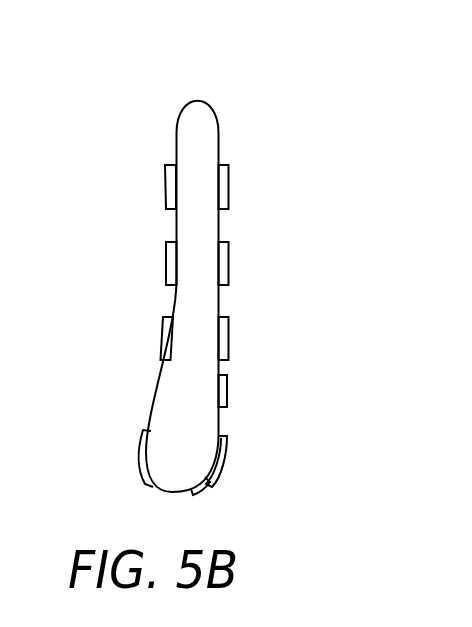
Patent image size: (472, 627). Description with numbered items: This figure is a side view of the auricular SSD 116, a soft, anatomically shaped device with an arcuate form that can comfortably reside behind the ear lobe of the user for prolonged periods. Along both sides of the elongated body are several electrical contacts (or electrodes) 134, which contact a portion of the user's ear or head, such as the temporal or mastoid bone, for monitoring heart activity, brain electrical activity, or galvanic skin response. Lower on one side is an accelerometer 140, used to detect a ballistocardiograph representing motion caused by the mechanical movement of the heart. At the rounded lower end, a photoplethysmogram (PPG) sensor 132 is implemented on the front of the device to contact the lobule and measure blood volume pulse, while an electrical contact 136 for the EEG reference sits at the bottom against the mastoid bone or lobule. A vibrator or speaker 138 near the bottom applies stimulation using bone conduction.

The auricular SSD 116 is at (239, 117).
The electrical contacts 134 is at (165, 189).
The accelerometer 140 is at (228, 393).
The photoplethysmogram (PPG) sensor 132 is at (141, 457).
The electrical contact for the EEG reference 136 is at (227, 444).
The vibrator or speaker 138 is at (204, 490).